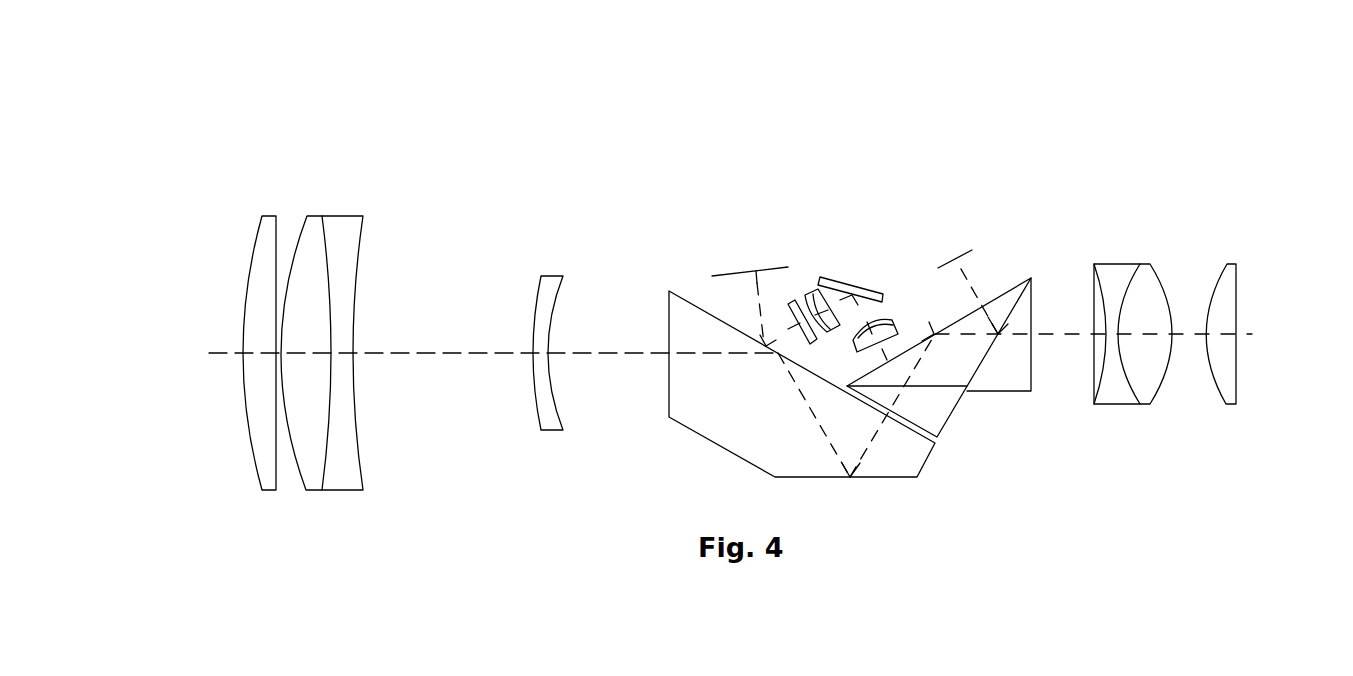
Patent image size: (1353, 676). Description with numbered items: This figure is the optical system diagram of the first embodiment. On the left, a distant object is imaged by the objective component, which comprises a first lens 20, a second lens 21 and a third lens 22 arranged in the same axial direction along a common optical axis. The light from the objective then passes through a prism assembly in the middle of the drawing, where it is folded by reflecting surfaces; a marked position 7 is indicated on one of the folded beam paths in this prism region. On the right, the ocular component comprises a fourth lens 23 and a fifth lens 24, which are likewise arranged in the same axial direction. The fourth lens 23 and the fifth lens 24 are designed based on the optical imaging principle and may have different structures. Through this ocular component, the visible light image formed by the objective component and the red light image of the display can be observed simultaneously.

The first lens 20 is at (204, 282).
The second lens 21 is at (301, 282).
The third lens 22 is at (510, 252).
The image plane / display 7 is at (977, 171).
The fourth lens 23 is at (1153, 239).
The fifth lens 24 is at (1272, 239).